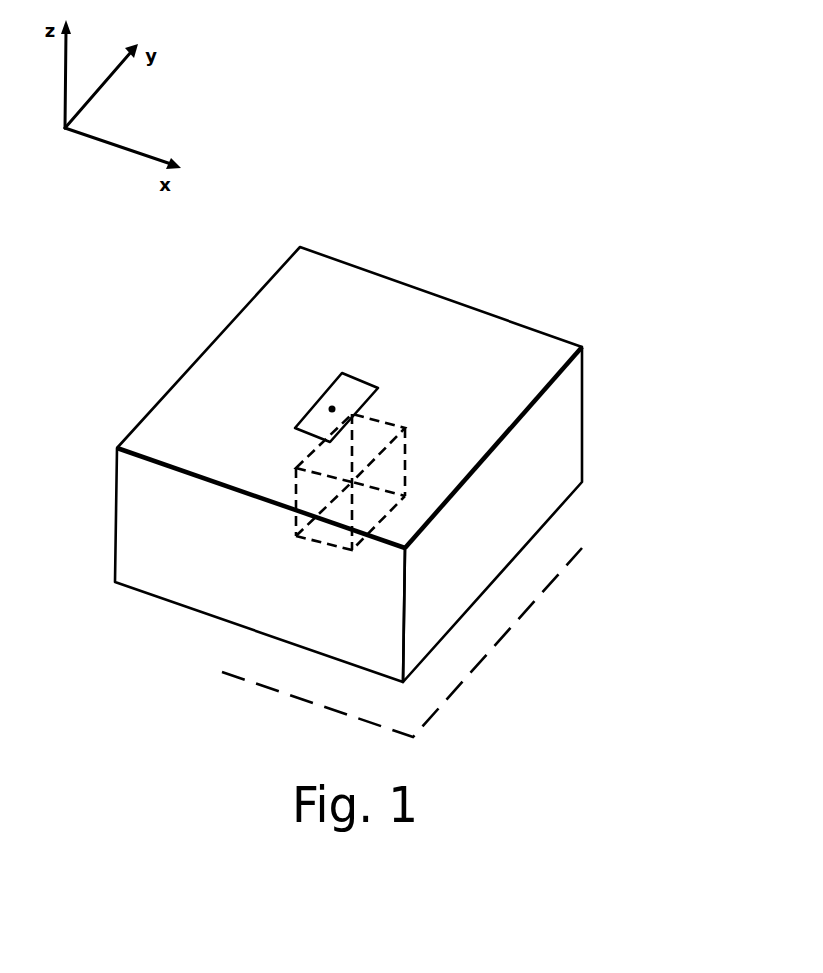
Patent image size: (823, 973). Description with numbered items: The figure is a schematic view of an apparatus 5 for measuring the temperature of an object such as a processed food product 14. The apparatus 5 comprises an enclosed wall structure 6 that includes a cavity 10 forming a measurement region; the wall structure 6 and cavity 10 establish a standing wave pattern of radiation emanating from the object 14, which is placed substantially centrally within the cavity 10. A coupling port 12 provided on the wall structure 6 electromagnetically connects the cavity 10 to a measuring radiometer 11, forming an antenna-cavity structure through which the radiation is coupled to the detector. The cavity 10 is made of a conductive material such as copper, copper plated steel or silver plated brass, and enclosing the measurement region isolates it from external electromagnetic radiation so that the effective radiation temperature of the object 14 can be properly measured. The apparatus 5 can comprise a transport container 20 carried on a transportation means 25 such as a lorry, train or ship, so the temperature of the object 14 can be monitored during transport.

The apparatus 5 is at (572, 328).
The cavity 10 is at (414, 464).
The measuring radiometer 11 is at (284, 399).
The coupling port 12 is at (353, 395).
The processed food product 14 is at (407, 455).
The transport container 20 is at (556, 472).
The transportation means 25 is at (470, 673).
The enclosed wall structure 6 is at (234, 583).